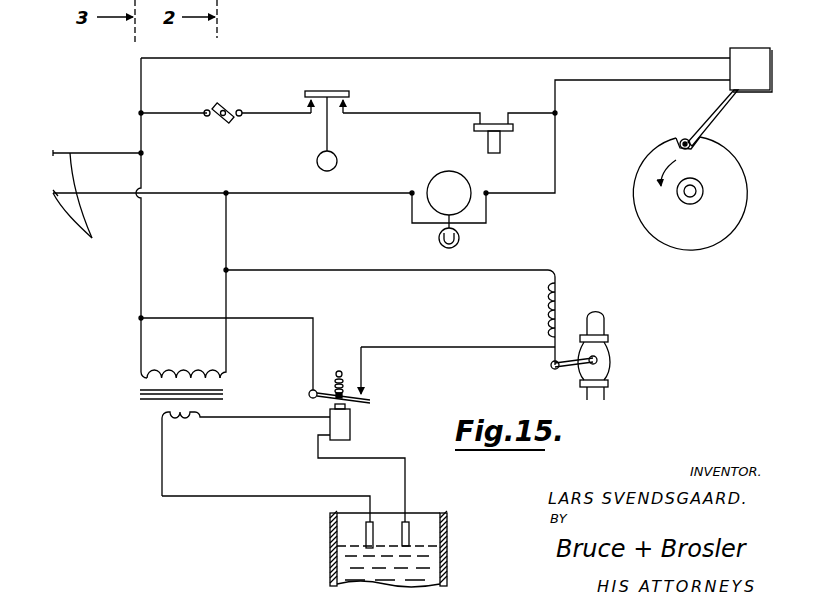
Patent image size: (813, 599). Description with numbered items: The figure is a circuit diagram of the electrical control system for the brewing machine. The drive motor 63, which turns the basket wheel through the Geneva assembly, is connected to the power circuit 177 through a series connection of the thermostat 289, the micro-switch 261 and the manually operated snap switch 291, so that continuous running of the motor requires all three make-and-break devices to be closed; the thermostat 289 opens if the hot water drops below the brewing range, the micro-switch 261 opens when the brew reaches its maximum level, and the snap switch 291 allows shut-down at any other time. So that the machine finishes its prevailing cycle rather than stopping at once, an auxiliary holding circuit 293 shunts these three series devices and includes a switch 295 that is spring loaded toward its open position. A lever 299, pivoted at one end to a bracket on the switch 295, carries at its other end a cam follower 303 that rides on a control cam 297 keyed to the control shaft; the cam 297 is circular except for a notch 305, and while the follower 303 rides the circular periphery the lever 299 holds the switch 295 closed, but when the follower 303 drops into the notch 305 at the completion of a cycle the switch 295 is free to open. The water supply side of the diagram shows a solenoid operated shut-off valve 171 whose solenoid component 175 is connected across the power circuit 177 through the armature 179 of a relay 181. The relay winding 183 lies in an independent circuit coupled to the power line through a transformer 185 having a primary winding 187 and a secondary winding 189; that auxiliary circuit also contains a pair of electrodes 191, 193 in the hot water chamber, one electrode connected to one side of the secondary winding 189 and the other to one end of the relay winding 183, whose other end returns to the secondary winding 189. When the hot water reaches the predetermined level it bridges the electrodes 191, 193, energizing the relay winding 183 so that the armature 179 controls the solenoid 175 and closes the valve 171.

The electric motor 63 is at (430, 181).
The solenoid operated shut-off valve 171 is at (570, 396).
The solenoid component 175 is at (565, 306).
The power circuit 177 is at (88, 203).
The armature 179 is at (368, 401).
The relay 181 is at (390, 421).
The relay winding 183 is at (348, 432).
The transformer 185 is at (128, 401).
The primary winding 187 is at (188, 377).
The secondary winding 189 is at (195, 427).
The electrode 191 is at (366, 534).
The electrode 193 is at (410, 540).
The micro-switch 261 is at (337, 92).
The thermostat 289 is at (500, 142).
The manual operated snap switch 291 is at (226, 119).
The auxiliary holding circuit 293 is at (563, 80).
The switch 295 is at (765, 79).
The control cam 297 is at (735, 187).
The lever 299 is at (715, 110).
The cam follower 303 is at (680, 138).
The notch 305 is at (702, 140).